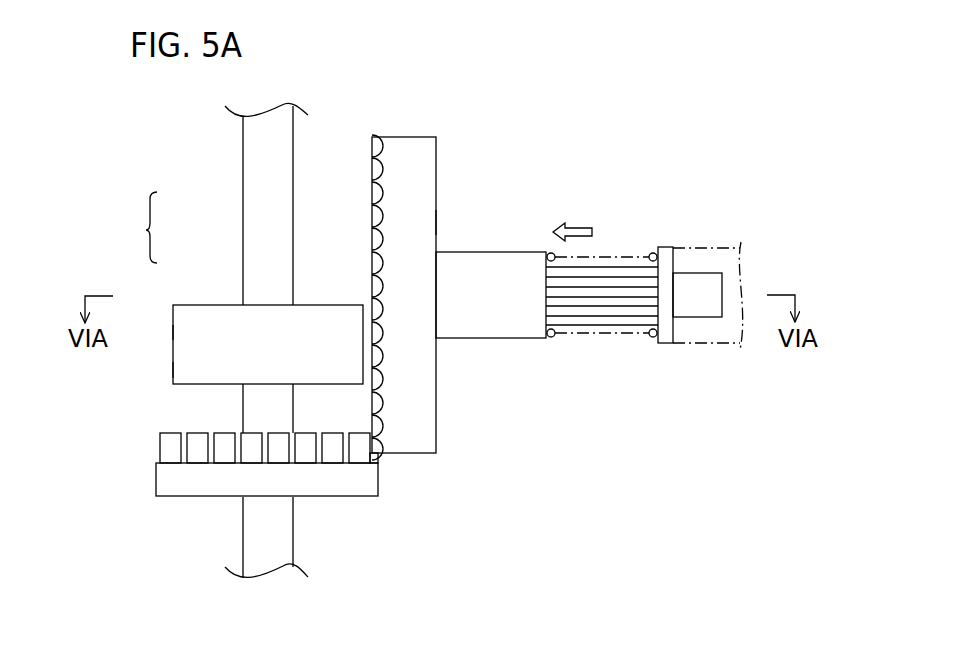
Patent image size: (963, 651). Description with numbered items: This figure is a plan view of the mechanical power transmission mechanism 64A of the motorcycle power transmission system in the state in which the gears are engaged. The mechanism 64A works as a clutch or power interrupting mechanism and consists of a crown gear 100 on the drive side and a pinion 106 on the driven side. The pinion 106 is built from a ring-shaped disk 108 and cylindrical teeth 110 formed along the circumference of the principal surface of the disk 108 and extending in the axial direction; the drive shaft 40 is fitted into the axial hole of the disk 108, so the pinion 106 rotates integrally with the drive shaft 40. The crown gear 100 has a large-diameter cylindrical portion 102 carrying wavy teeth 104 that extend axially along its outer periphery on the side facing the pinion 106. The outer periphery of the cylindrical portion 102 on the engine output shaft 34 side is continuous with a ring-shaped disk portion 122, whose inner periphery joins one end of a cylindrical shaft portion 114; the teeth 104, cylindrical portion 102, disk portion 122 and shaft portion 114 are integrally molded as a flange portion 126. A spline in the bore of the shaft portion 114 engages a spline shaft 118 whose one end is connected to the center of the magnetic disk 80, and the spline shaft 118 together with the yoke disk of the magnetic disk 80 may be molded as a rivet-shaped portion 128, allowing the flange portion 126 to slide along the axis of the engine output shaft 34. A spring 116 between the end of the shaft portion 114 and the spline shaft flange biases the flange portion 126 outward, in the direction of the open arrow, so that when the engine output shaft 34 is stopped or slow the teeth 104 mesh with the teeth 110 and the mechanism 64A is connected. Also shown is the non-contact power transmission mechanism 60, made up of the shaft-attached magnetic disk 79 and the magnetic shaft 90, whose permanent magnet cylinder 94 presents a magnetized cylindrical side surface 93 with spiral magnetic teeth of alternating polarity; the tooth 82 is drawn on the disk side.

The engine output shaft 34 is at (683, 247).
The drive shaft 40 is at (283, 528).
The non-contact power transmission mechanism 60 is at (137, 227).
The mechanical power transmission mechanism 64A is at (523, 468).
The shaft-attached magnetic disk 79 is at (368, 216).
The magnetic disk 80 is at (368, 177).
The tooth 82 is at (371, 248).
The magnetic shaft 90 is at (208, 303).
The magnetized cylindrical side surface 93 is at (172, 332).
The permanent magnet cylinder 94 is at (172, 370).
The crown gear 100 is at (365, 299).
The large-diameter cylindrical portion 102 is at (407, 437).
The wavy teeth 104 is at (375, 389).
The pinion 106 is at (333, 498).
The ring-shaped disk 108 is at (358, 492).
The cylindrical teeth 110 is at (366, 460).
The cylindrical shaft portion 114 is at (463, 340).
The spring 116 is at (655, 342).
The spline shaft 118 is at (623, 308).
The ring-shaped disk portion 122 is at (436, 222).
The flange portion 126 is at (397, 567).
The rivet-shaped portion 128 is at (600, 297).